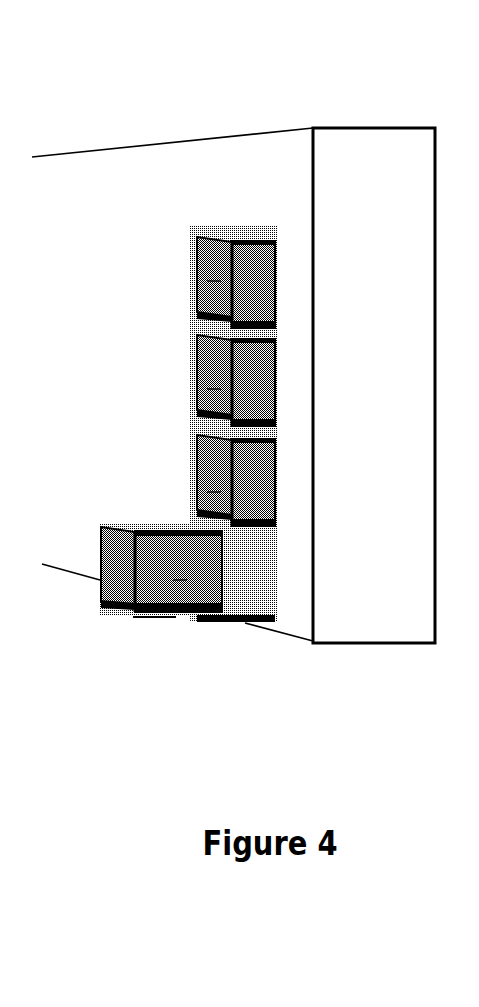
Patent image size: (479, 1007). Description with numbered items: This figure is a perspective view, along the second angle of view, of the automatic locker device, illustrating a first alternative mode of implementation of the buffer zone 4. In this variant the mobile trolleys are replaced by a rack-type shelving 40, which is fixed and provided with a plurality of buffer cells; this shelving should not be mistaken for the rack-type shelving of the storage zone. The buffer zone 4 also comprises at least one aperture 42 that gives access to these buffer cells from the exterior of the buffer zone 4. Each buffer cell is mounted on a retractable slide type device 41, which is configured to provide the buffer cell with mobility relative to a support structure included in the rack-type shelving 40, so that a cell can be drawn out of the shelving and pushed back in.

The buffer zone 4 is at (274, 157).
The rack-type shelving 40 is at (273, 565).
The retractable slide type device 41 is at (175, 618).
The aperture 42 is at (256, 232).